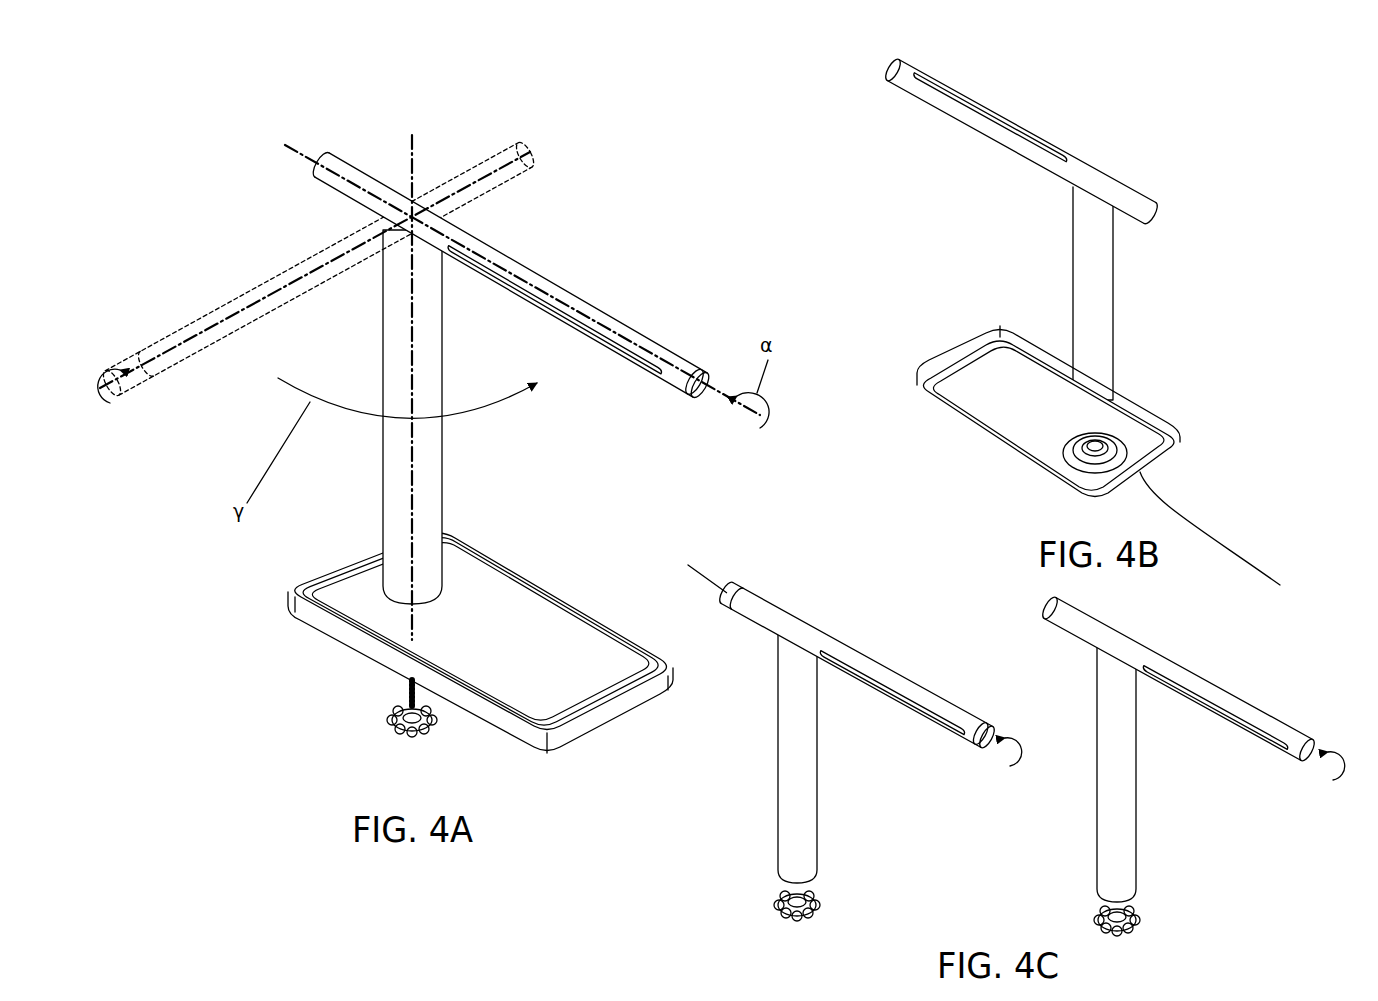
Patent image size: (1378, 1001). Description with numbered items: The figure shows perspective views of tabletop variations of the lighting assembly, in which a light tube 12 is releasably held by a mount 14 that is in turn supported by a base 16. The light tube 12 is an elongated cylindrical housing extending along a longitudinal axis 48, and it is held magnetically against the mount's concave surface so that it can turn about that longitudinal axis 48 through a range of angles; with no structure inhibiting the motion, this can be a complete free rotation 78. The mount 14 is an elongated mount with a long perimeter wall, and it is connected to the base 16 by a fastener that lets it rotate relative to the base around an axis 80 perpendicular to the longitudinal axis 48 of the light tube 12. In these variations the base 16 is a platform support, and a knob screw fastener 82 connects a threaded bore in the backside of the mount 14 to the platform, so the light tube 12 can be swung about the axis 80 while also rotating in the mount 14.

In FIG. 4A, the light tube 12 is at (638, 335).
In FIG. 4B, the light tube 12 is at (1130, 197).
In FIG. 4C, the light tube 12 is at (813, 630).
In FIG. 4A, the mount 14 is at (430, 515).
In FIG. 4B, the mount 14 is at (1090, 287).
In FIG. 4C, the mount 14 is at (803, 808).
In FIG. 4A, the base 16 is at (343, 588).
In FIG. 4B, the base 16 is at (977, 410).
In FIG. 4A, the longitudinal axis 48 is at (562, 302).
In FIG. 4A, the free rotation 78 is at (762, 450).
In FIG. 4A, the axis 80 is at (408, 153).
In FIG. 4A, the knob screw fastener 82 is at (425, 722).
In FIG. 4B, the knob screw fastener 82 is at (1065, 452).
In FIG. 4C, the knob screw fastener 82 is at (808, 906).